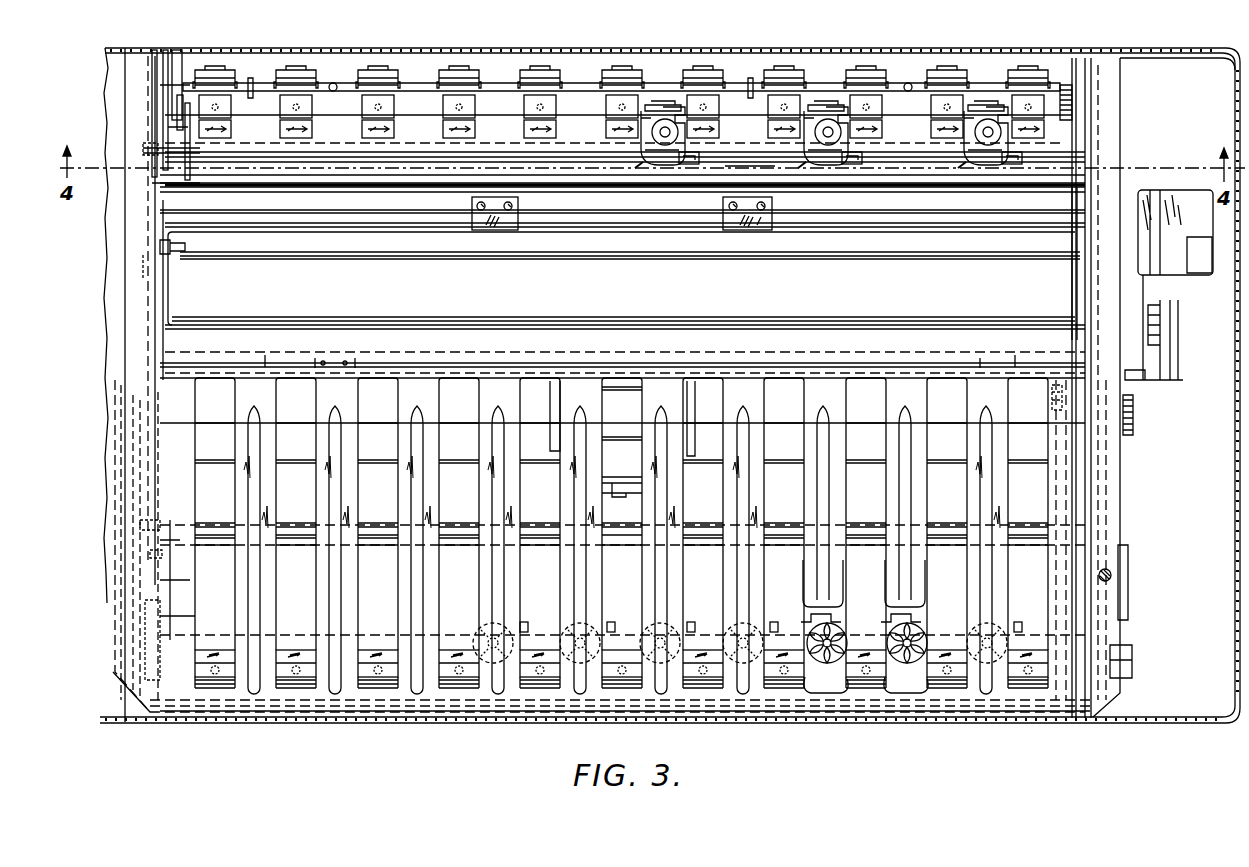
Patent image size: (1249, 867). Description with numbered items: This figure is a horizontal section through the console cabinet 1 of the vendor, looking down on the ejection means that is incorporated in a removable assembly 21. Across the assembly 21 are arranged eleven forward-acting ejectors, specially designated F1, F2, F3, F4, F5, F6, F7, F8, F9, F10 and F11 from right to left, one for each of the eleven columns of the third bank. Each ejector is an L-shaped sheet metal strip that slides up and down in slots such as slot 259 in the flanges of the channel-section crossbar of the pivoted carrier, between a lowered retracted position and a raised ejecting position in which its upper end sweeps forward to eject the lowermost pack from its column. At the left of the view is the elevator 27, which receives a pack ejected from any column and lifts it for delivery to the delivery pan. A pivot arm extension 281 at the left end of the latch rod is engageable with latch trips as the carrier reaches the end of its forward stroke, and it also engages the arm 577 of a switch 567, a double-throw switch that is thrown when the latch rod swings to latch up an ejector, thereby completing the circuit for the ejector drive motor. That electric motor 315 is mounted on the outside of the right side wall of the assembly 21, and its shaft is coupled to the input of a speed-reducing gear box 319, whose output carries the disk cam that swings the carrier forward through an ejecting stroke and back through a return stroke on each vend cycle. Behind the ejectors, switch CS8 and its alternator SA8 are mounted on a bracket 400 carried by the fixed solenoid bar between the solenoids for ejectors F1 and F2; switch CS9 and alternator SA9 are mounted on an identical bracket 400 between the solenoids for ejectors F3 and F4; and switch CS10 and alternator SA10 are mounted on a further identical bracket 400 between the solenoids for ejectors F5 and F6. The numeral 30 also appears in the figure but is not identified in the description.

The console cabinet 1 is at (1158, 44).
The ejector F1 is at (1025, 78).
The ejector F2 is at (944, 78).
The ejector F3 is at (863, 78).
The ejector F4 is at (781, 78).
The ejector F5 is at (700, 78).
The ejector F6 is at (619, 78).
The ejector F7 is at (537, 78).
The ejector F8 is at (455, 78).
The ejector F9 is at (374, 78).
The ejector F10 is at (291, 78).
The ejector F11 is at (211, 78).
The slot 259 is at (280, 83).
The pivot arm extension 281 is at (170, 79).
The arm 577 is at (178, 105).
The switch 567 is at (165, 123).
The bracket 400 is at (662, 104).
The frame 30 is at (747, 128).
The alternator SA10 is at (636, 166).
The switch CS10 is at (690, 165).
The alternator SA9 is at (801, 166).
The switch CS9 is at (858, 165).
The alternator SA8 is at (959, 166).
The switch CS8 is at (1006, 165).
The elevator 27 is at (147, 298).
The removable assembly 21 is at (118, 682).
The electric motor 315 is at (1163, 185).
The speed-reducing gear box 319 is at (1144, 292).